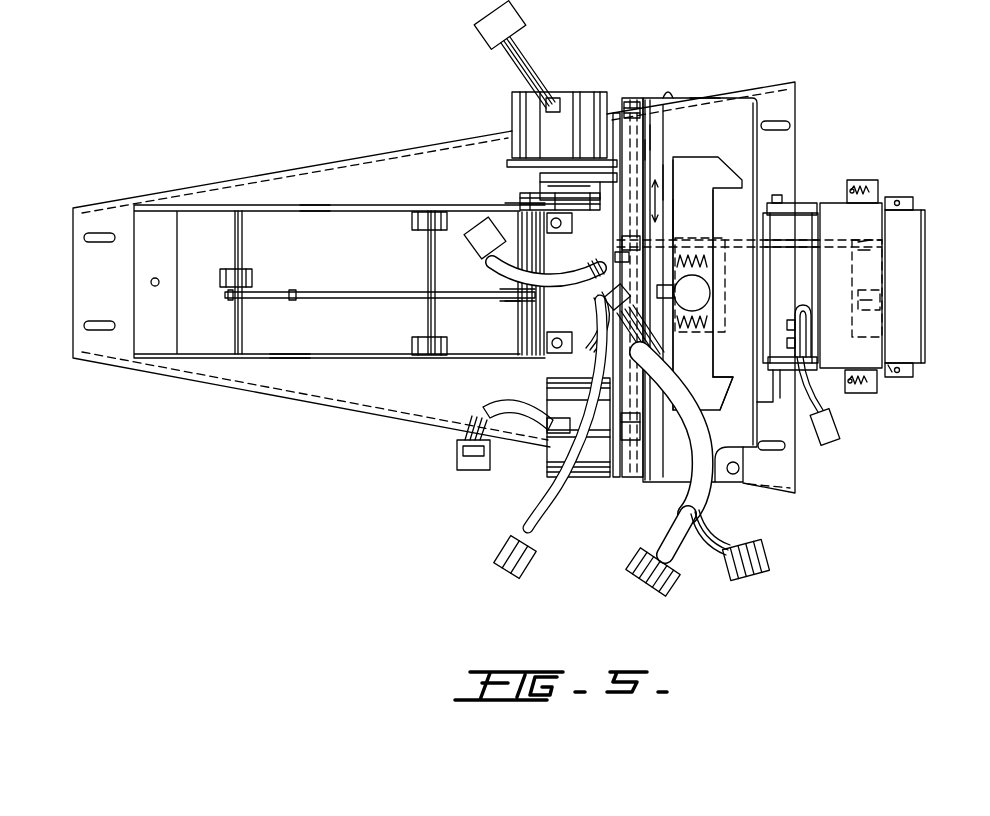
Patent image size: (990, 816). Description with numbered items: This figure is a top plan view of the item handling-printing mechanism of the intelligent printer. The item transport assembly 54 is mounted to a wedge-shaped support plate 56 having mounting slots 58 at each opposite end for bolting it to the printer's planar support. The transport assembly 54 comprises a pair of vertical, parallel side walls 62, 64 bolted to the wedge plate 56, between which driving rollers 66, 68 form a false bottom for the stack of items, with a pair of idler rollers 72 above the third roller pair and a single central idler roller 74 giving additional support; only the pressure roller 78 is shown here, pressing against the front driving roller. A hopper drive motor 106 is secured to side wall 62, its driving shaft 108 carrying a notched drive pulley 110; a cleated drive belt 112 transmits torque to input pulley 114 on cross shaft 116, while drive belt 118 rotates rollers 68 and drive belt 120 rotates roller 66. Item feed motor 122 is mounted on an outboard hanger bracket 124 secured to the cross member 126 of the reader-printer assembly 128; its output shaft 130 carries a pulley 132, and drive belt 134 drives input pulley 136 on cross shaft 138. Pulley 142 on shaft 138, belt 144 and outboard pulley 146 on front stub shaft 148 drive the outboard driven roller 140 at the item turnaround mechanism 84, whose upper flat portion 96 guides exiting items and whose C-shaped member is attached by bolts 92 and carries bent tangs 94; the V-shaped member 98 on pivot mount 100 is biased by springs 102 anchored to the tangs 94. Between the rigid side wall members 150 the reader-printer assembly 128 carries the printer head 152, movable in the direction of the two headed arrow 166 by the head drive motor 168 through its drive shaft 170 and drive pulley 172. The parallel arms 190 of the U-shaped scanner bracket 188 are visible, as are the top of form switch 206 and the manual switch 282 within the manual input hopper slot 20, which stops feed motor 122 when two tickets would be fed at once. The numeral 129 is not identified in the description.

The manual item input hopper slot 20 is at (537, 327).
The item transport assembly 54 is at (355, 356).
The wedge-shaped support plate 56 is at (278, 171).
The mounting slots 58 is at (85, 238).
The side wall 62 is at (313, 212).
The side wall 64 is at (300, 338).
The driving roller 66 is at (252, 276).
The driving rollers 68 is at (412, 222).
The idler rollers 72 is at (468, 228).
The idler roller 74 is at (492, 270).
The pressure roller 78 is at (666, 284).
The item turnaround mechanism 84 is at (899, 282).
The bolts 92 is at (780, 200).
The bent tangs 94 is at (855, 394).
The upper flat portion 96 is at (840, 231).
The V-shaped member 98 is at (915, 345).
The pivot mount 100 is at (888, 373).
The springs 102 is at (877, 198).
The hopper drive motor 106 is at (607, 293).
The driving shaft 108 is at (620, 242).
The notched drive pulley 110 is at (548, 178).
The drive belt 112 is at (535, 196).
The input pulley 114 is at (508, 198).
The cross shaft 116 is at (522, 293).
The drive belt 118 is at (503, 304).
The drive belt 120 is at (350, 292).
The item feed motor 122 is at (515, 103).
The hanger bracket 124 is at (616, 110).
The cross member 126 is at (632, 96).
The reader-printer assembly 128 is at (678, 234).
The plate edge 129 is at (690, 100).
The output shaft 130 is at (555, 166).
The pulley 132 is at (510, 163).
The drive belt 134 is at (583, 173).
The input pulley 136 is at (652, 136).
The cross shaft 138 is at (643, 172).
The outboard driven roller 140 is at (872, 300).
The pulley 142 is at (612, 252).
The belt 144 is at (800, 238).
The outboard pulley 146 is at (875, 252).
The front stub shaft 148 is at (872, 240).
The side wall members 150 is at (740, 98).
The printer head 152 is at (699, 285).
The two headed arrow 166 is at (668, 185).
The printer-reader head drive motor 168 is at (550, 392).
The drive shaft 170 is at (586, 458).
The drive pulley 172 is at (626, 445).
The U-shaped bracket 188 is at (716, 336).
The parallel arms 190 is at (716, 240).
The top of form switch 206 is at (795, 307).
The manual switch 282 is at (592, 318).